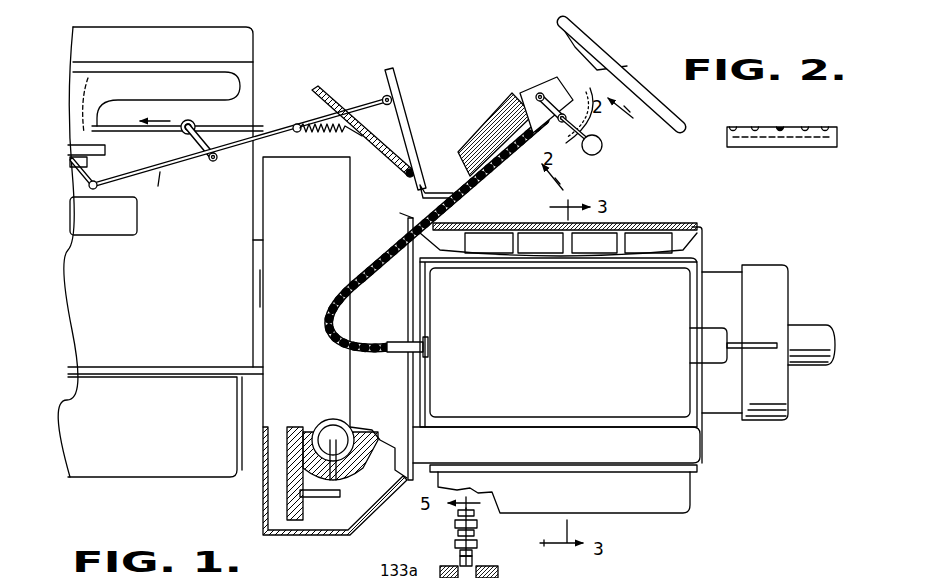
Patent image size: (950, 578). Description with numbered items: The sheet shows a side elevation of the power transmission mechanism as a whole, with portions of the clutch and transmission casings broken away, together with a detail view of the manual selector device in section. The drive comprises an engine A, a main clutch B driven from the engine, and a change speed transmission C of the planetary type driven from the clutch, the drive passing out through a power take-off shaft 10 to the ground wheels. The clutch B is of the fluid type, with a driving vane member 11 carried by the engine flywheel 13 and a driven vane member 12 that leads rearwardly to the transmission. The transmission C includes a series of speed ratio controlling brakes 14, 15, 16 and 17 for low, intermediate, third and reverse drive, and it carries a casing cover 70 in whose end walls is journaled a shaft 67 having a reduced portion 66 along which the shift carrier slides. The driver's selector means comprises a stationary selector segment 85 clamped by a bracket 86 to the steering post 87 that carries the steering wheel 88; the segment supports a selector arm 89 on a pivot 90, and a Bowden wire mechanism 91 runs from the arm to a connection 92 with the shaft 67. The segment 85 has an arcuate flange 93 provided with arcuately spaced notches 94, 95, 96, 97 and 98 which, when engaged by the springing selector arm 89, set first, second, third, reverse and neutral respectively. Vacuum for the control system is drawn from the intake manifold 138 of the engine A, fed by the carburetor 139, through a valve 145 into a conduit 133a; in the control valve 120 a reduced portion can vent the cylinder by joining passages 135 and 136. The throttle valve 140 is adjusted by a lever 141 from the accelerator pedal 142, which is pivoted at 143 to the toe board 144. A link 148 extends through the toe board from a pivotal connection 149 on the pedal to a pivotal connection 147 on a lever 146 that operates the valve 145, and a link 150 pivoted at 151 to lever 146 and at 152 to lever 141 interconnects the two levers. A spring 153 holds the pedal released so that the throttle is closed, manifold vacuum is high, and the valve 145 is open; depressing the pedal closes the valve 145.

In FIG. 1, the engine A is at (254, 82).
In FIG. 1, the main clutch B is at (262, 487).
In FIG. 1, the change speed transmission C is at (698, 266).
In FIG. 1, the power take-off shaft 10 is at (820, 326).
In FIG. 1, the driving vane member 11 is at (370, 492).
In FIG. 1, the driven vane member 12 is at (322, 465).
In FIG. 1, the engine flywheel 13 is at (294, 535).
In FIG. 1, the speed ratio controlling brake 14 is at (591, 245).
In FIG. 1, the speed ratio controlling brake 15 is at (534, 245).
In FIG. 1, the speed ratio controlling brake 16 is at (478, 243).
In FIG. 1, the speed ratio controlling brake 17 is at (636, 243).
In FIG. 1, the reduced portion 66 is at (765, 348).
In FIG. 1, the shaft 67 is at (413, 357).
In FIG. 1, the casing cover 70 is at (560, 400).
In FIG. 1, the selector segment 85 is at (560, 86).
In FIG. 2, the selector segment 85 is at (758, 148).
In FIG. 1, the bracket 86 is at (530, 92).
In FIG. 1, the steering post 87 is at (487, 133).
In FIG. 1, the steering wheel 88 is at (633, 77).
In FIG. 1, the selector arm 89 is at (603, 145).
In FIG. 2, the selector arm 89 is at (782, 126).
In FIG. 1, the pivot 90 is at (537, 92).
In FIG. 1, the Bowden wire mechanism 91 is at (520, 135).
In FIG. 1, the connection 92 is at (387, 338).
In FIG. 1, the arcuate flange 93 is at (605, 63).
In FIG. 2, the arcuate flange 93 is at (724, 127).
In FIG. 2, the notch 94 is at (785, 147).
In FIG. 2, the notch 95 is at (807, 126).
In FIG. 2, the notch 96 is at (827, 126).
In FIG. 2, the notch 97 is at (735, 126).
In FIG. 2, the notch 98 is at (757, 126).
In FIG. 1, the valve 120 is at (474, 570).
In FIG. 1, the conduit 133a is at (265, 190).
In FIG. 1, the passage 135 is at (438, 566).
In FIG. 1, the passage 136 is at (505, 565).
In FIG. 1, the intake manifold 138 is at (222, 80).
In FIG. 1, the carburetor 139 is at (120, 233).
In FIG. 1, the throttle valve 140 is at (126, 105).
In FIG. 1, the lever 141 is at (104, 152).
In FIG. 1, the accelerator pedal 142 is at (397, 82).
In FIG. 1, the pivot 143 is at (408, 205).
In FIG. 1, the toe board 144 is at (395, 160).
In FIG. 1, the valve 145 is at (191, 121).
In FIG. 1, the lever 146 is at (203, 143).
In FIG. 1, the pivotal connection 147 is at (215, 150).
In FIG. 1, the link 148 is at (314, 90).
In FIG. 1, the pivotal connection 149 is at (385, 96).
In FIG. 1, the link 150 is at (158, 186).
In FIG. 1, the pivotal connection 151 is at (214, 162).
In FIG. 1, the pivotal connection 152 is at (103, 196).
In FIG. 1, the spring 153 is at (333, 140).